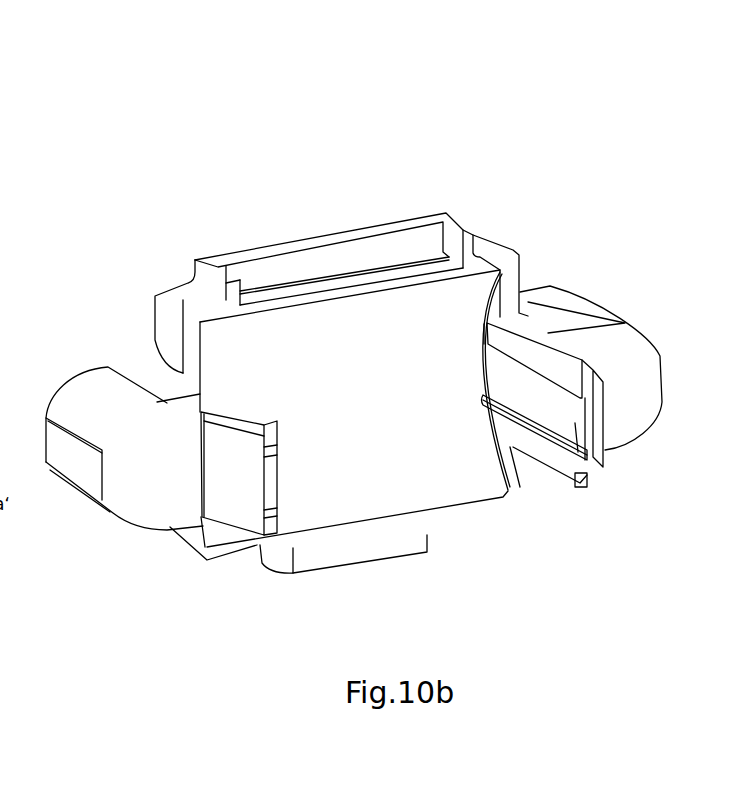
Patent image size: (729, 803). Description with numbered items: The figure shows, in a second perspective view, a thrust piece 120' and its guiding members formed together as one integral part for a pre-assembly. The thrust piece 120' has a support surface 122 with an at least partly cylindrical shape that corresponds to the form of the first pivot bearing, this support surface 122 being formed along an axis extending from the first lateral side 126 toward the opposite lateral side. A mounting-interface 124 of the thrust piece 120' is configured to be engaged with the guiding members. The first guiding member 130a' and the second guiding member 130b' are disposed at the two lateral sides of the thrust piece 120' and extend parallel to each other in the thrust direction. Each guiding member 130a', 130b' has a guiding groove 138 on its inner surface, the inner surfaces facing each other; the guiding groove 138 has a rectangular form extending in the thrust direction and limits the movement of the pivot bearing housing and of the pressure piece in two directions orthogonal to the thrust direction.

The thrust piece 120' is at (341, 207).
The support surface 122 is at (397, 460).
The mounting-interface 124 is at (47, 417).
The first lateral side 126 is at (662, 406).
The first guiding member 130a' is at (204, 507).
The second guiding member 130b' is at (562, 350).
The guiding groove 138 is at (597, 467).